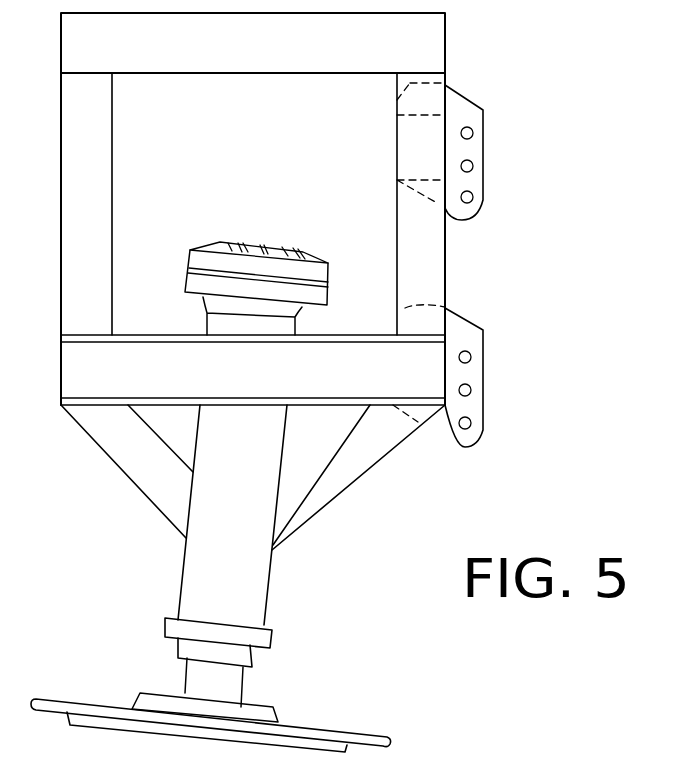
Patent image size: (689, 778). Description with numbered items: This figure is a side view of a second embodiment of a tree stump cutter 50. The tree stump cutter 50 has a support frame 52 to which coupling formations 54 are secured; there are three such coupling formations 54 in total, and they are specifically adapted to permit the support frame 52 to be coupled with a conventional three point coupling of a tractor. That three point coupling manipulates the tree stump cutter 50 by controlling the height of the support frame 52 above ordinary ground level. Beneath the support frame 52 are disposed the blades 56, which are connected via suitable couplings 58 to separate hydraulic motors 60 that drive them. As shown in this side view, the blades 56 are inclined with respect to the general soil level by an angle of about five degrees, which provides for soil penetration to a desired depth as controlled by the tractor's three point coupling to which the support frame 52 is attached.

The tree stump cutter 50 is at (83, 478).
The support frame 52 is at (437, 272).
The coupling formations 54 is at (480, 182).
The blades 56 is at (347, 711).
The couplings 58 is at (270, 645).
The hydraulic motors 60 is at (260, 580).